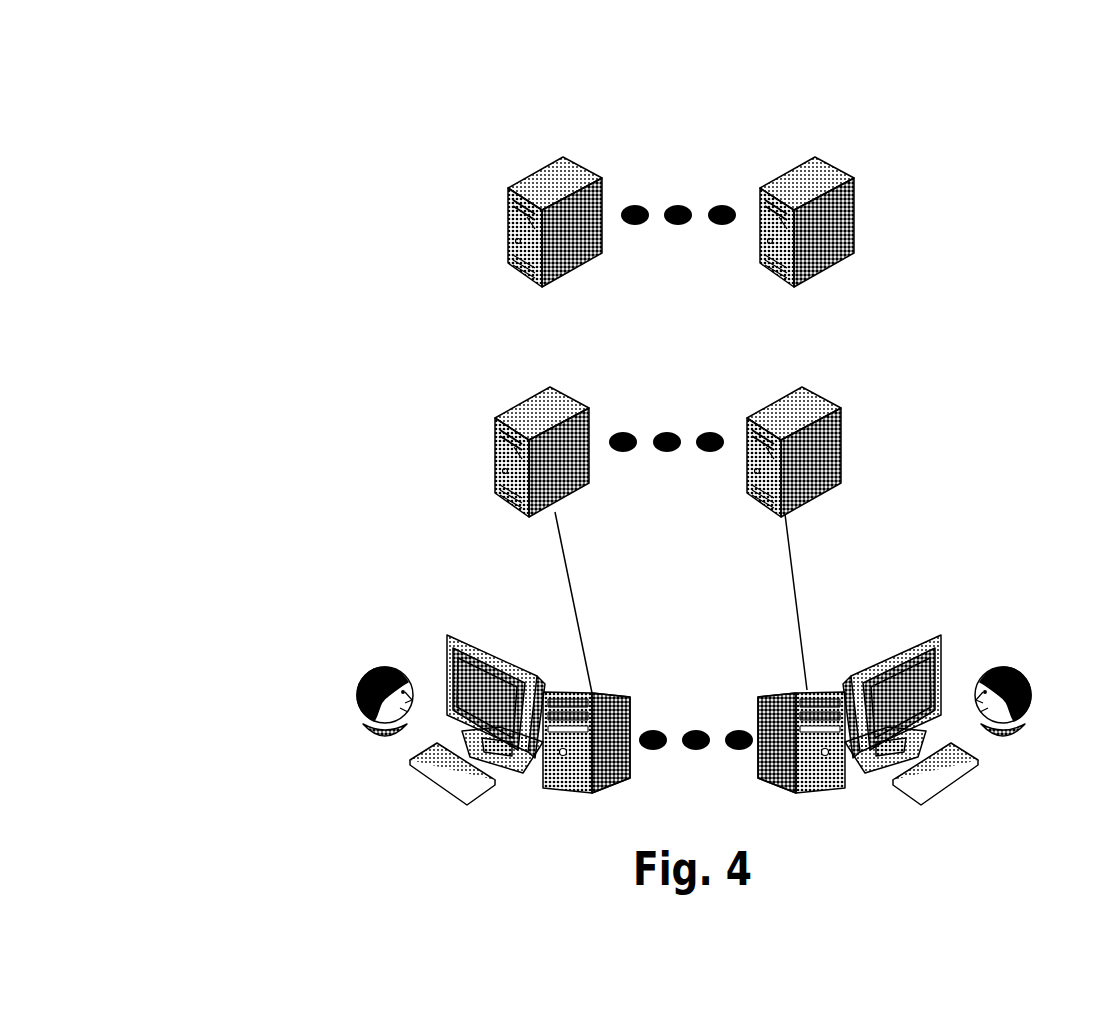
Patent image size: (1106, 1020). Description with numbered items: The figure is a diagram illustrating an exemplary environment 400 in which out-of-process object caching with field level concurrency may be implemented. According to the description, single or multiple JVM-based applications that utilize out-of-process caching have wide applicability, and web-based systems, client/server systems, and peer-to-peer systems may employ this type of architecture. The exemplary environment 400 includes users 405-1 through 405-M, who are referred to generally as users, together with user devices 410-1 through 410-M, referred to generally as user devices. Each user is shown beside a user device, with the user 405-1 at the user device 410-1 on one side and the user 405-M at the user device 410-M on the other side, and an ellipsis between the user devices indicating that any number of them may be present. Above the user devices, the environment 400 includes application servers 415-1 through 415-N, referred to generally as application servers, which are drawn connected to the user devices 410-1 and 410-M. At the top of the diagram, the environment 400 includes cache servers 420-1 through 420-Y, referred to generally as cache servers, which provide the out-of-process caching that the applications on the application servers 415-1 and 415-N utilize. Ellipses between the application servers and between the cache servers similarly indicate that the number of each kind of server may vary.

The exemplary environment 400 is at (258, 72).
The cache server 420-1 is at (553, 180).
The cache server 420-Y is at (812, 180).
The application server 415-1 is at (541, 499).
The application server 415-N is at (804, 497).
The user device 410-1 is at (512, 652).
The user device 410-M is at (876, 652).
The user 405-1 is at (397, 657).
The user 405-M is at (997, 657).